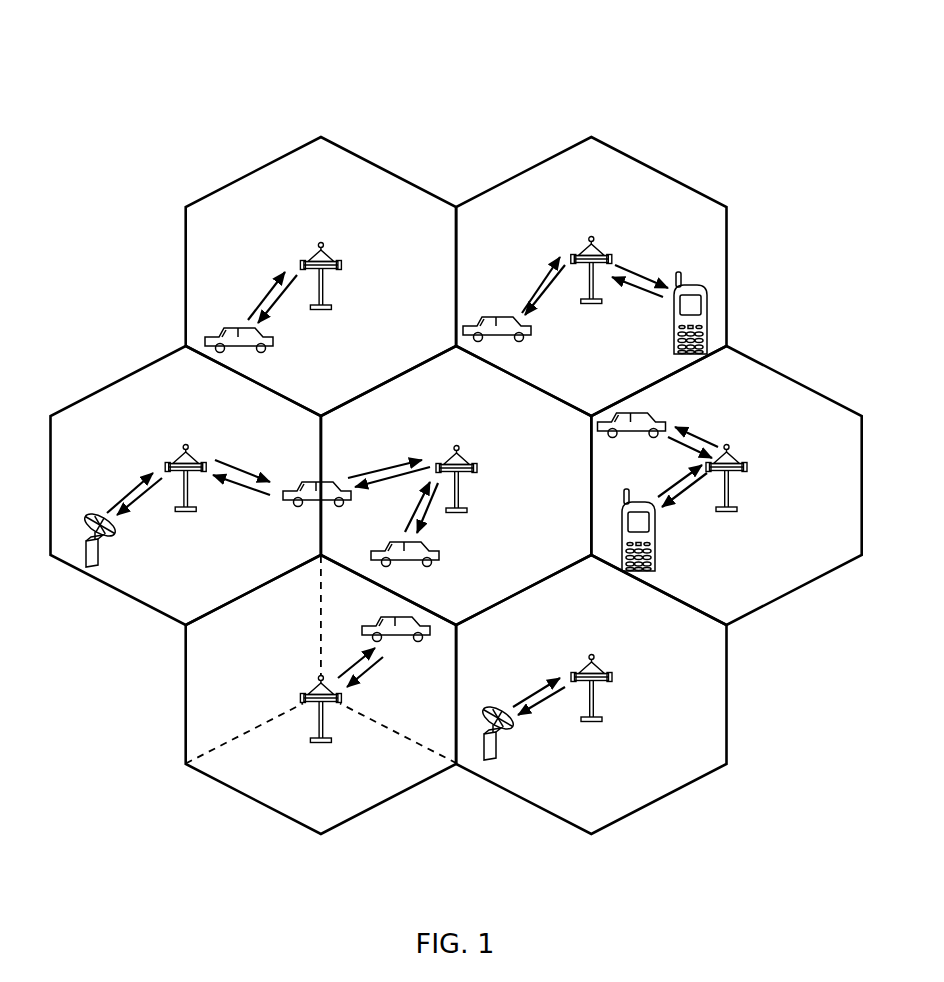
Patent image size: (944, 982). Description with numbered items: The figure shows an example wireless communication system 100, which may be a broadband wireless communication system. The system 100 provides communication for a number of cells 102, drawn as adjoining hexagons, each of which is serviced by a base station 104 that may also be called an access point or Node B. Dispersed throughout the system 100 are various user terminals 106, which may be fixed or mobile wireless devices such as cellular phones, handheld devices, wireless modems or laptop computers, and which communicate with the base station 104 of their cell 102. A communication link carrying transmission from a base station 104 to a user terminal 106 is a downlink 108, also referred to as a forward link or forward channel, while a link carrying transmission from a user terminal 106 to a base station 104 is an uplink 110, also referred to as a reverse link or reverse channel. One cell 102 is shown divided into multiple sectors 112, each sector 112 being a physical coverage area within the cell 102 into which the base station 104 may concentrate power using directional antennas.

The wireless communication system 100 is at (736, 64).
The cell 102 is at (262, 167).
The base station 104 is at (321, 242).
The user terminal 106 is at (273, 350).
The downlink 108 is at (275, 310).
The uplink 110 is at (267, 287).
The sector 112 is at (368, 795).